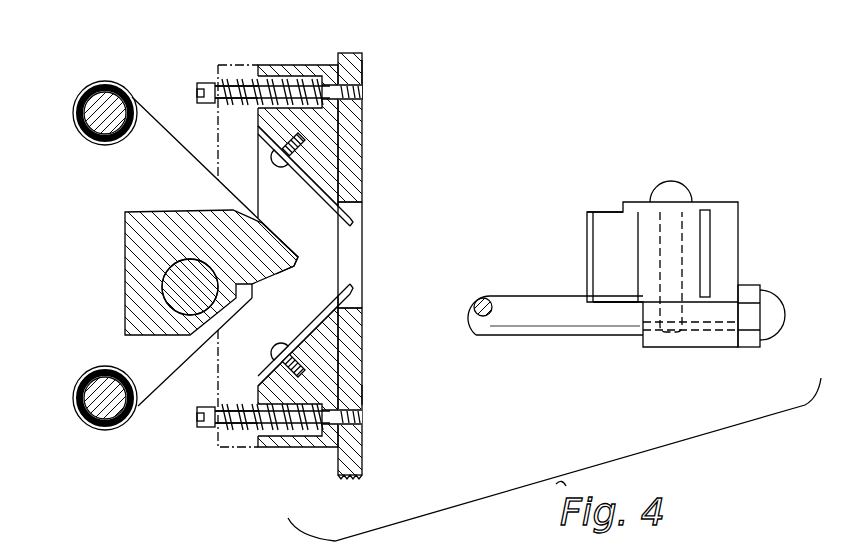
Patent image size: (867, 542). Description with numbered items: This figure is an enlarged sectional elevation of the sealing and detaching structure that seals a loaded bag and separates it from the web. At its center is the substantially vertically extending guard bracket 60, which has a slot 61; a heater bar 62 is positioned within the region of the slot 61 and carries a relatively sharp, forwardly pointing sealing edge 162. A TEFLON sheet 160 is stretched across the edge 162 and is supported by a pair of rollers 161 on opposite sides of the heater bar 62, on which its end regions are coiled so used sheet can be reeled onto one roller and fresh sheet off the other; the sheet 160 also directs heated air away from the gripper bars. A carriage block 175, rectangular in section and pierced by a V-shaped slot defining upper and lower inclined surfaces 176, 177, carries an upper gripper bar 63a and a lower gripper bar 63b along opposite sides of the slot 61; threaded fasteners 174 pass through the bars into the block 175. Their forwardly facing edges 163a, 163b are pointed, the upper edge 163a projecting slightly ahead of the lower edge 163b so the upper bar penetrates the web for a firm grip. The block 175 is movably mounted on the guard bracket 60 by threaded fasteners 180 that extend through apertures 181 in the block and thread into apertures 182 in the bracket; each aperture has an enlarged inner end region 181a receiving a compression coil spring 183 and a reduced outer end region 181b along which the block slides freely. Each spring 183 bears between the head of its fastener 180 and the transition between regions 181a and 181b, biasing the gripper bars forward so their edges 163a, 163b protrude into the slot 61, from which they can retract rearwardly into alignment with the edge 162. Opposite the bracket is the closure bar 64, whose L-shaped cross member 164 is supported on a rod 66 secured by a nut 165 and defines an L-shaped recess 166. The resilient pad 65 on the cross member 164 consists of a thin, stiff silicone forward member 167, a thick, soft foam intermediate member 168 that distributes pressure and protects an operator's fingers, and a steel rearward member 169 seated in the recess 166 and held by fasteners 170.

The guard bracket 60 is at (360, 478).
The slot 61 is at (356, 305).
The heater bar 62 is at (126, 262).
The upper gripper bar 63a is at (341, 238).
The lower gripper bar 63b is at (341, 274).
The closure bar 64 is at (646, 257).
The resilient pad 65 is at (597, 213).
The rod 66 is at (550, 338).
The TEFLON sheet 160 is at (172, 375).
The roller 161 is at (100, 144).
The sealing edge 162 is at (298, 258).
The upper gripper bar edge 163a is at (352, 217).
The lower gripper bar edge 163b is at (352, 296).
The cross member 164 is at (740, 240).
The nut 165 is at (780, 334).
The L-shaped recess 166 is at (703, 214).
The forward member 167 is at (590, 244).
The intermediate member 168 is at (632, 263).
The rearward member 169 is at (680, 263).
The fastener 170 is at (670, 182).
The threaded fastener 174 is at (274, 168).
The carriage block 175 is at (328, 167).
The upper inclined surface 176 is at (337, 214).
The lower inclined surface 177 is at (327, 308).
The threaded fastener 180 is at (201, 92).
The aperture 181 is at (301, 75).
The enlarged inner end region 181a is at (278, 76).
The outer end region 181b is at (336, 76).
The aperture 182 is at (352, 80).
The compression coil spring 183 is at (235, 78).